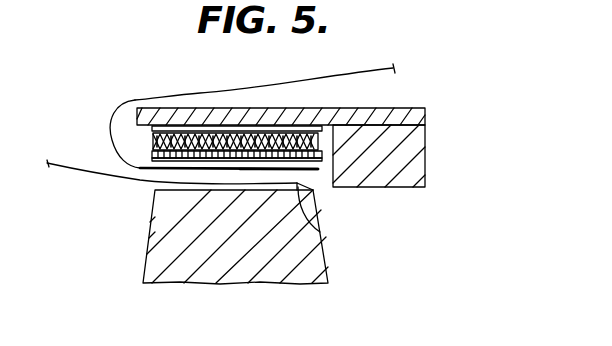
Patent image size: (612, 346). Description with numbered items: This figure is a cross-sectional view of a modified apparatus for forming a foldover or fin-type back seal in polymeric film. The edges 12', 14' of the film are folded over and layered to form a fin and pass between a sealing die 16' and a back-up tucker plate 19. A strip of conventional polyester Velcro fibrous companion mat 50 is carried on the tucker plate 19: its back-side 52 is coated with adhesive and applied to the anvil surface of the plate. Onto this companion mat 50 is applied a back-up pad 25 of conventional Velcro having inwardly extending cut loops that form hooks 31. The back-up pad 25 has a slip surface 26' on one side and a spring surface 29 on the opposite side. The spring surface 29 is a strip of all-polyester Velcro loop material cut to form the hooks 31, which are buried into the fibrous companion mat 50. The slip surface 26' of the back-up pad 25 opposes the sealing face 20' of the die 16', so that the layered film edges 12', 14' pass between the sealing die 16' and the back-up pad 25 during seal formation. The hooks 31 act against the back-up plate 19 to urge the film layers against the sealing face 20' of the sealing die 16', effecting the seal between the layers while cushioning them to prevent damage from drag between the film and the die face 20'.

The fibrous companion mat 50 is at (153, 145).
The back-side 52 is at (232, 124).
The hooks 31 is at (310, 133).
The back-up tucker plate 19 is at (410, 112).
The spring surface 29 is at (154, 143).
The back-up pad 25 is at (162, 162).
The slip surface 26' is at (219, 197).
The sealing die 16' is at (217, 241).
The sealing face 20' is at (330, 209).
The edge of polymeric film 12' is at (323, 196).
The edge of polymeric film 14' is at (335, 229).